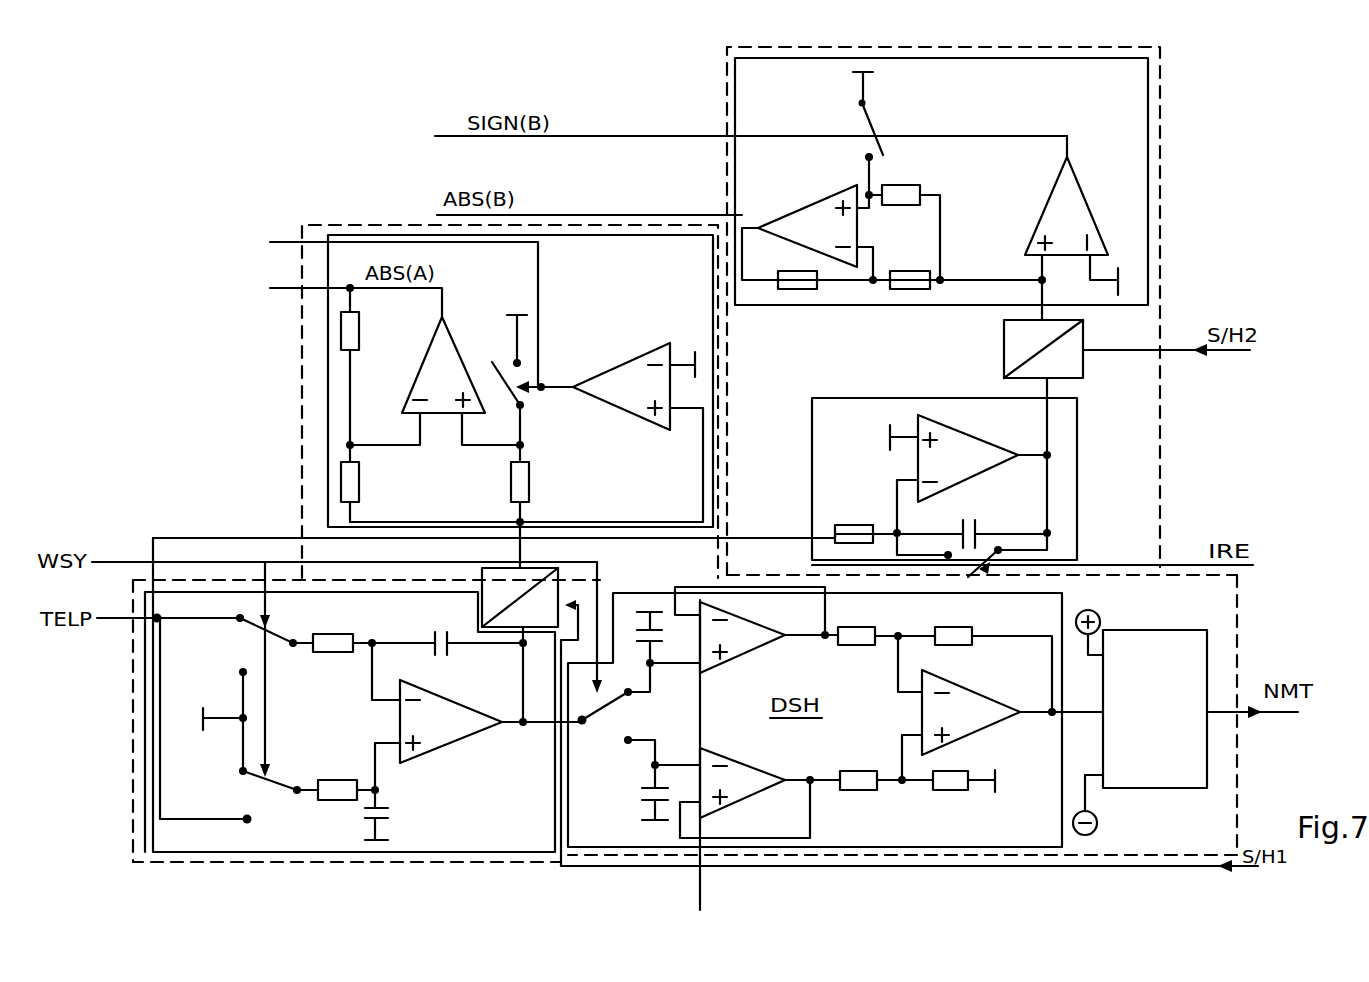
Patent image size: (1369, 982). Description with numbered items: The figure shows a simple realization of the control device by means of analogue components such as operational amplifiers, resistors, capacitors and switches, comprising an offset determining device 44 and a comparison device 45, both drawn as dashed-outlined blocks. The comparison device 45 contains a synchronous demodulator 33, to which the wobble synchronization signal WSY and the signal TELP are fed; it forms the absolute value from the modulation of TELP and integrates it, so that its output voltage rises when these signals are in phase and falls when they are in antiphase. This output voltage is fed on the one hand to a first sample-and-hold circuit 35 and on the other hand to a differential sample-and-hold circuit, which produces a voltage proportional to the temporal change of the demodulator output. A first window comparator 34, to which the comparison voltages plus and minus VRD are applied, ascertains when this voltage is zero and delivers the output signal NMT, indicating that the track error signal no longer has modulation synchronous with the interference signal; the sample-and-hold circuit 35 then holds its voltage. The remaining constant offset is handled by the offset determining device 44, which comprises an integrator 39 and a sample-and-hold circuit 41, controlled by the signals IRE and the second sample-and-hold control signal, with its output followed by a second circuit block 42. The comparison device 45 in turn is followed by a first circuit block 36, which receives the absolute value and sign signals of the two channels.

The synchronous demodulator 33 is at (178, 840).
The first window comparator 34 is at (1140, 716).
The first sample-and-hold circuit 35 is at (562, 598).
The first circuit block 36 is at (668, 271).
The integrator 39 is at (857, 445).
The sample-and-hold circuit 41 is at (1003, 350).
The second circuit block 42 is at (1094, 103).
The offset determining device 44 is at (1162, 188).
The comparison device 45 is at (1240, 638).